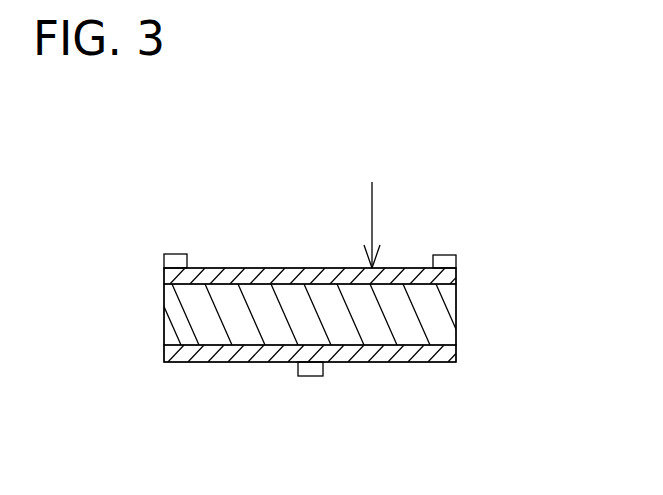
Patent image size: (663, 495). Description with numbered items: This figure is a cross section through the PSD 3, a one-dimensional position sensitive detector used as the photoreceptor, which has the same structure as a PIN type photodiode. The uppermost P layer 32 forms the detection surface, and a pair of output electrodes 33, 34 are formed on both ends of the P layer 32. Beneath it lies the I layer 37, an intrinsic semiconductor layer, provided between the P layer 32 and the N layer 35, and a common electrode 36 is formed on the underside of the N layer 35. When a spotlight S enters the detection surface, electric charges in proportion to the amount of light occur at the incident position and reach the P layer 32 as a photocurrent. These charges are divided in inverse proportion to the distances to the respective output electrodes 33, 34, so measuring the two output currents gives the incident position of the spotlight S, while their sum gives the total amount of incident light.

The PSD 3 is at (174, 158).
The spotlight S is at (372, 210).
The P layer 32 is at (440, 278).
The output electrode 33 is at (163, 262).
The output electrode 34 is at (457, 260).
The N layer 35 is at (440, 354).
The common electrode 36 is at (323, 368).
The I layer 37 is at (445, 320).